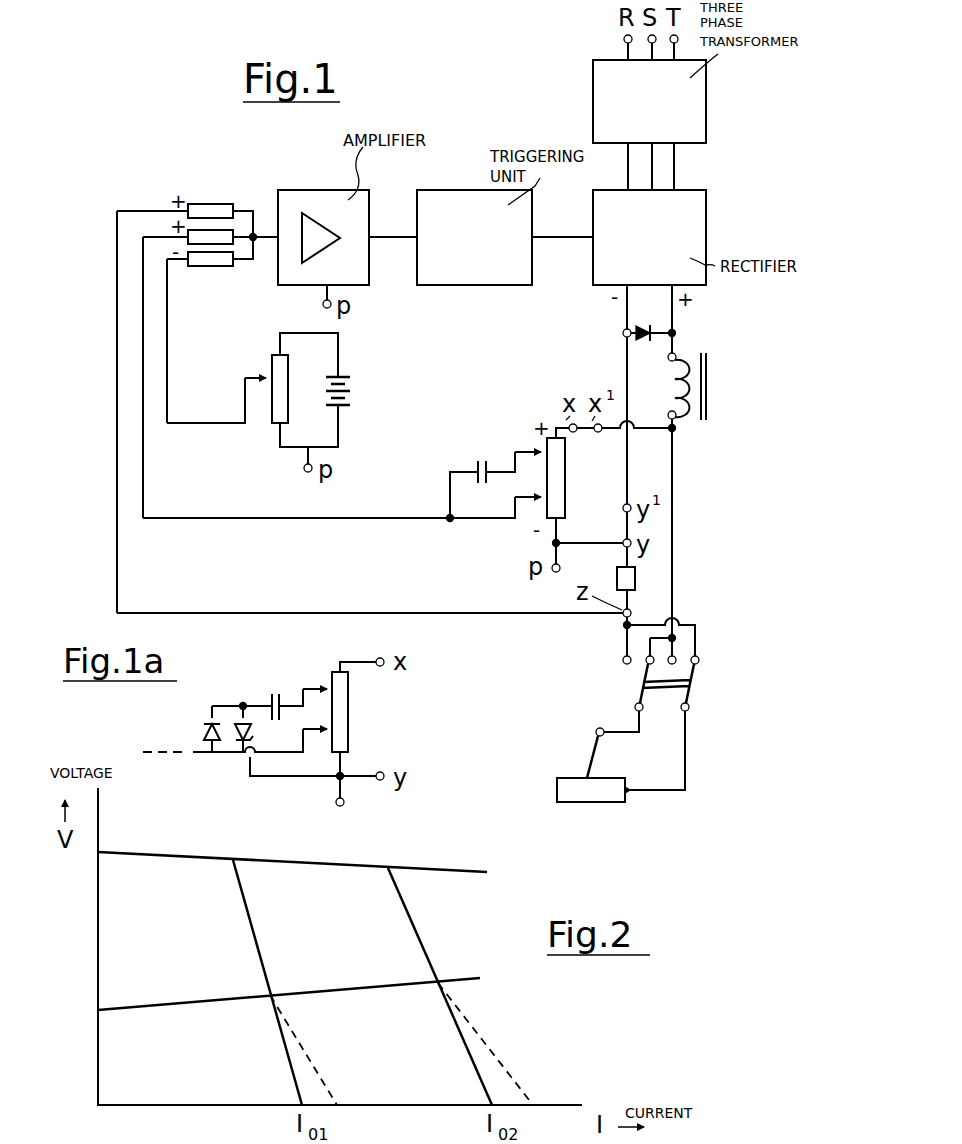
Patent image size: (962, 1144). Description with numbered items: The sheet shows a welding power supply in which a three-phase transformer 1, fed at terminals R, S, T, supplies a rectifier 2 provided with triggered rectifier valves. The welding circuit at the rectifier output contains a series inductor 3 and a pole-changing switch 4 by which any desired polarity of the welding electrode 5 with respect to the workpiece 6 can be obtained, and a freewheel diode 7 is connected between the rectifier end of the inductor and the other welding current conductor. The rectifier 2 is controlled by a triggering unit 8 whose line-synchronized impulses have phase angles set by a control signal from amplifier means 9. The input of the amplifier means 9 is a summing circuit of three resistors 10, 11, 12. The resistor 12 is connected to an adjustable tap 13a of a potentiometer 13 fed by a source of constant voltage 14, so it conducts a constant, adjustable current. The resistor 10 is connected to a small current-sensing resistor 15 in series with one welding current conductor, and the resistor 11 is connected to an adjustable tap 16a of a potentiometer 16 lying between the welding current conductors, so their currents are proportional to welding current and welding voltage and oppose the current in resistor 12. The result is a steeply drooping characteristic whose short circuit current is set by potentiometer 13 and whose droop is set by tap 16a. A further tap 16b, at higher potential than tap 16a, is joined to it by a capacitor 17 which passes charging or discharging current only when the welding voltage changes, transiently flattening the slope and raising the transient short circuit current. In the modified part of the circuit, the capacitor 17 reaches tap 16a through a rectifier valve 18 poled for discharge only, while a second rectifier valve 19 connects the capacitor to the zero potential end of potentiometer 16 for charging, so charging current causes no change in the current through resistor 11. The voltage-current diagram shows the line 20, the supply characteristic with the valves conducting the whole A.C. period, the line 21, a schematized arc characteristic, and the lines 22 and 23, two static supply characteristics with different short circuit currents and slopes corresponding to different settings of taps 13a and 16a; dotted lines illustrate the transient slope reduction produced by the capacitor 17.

In FIG. 1, the three-phase transformer 1 is at (610, 100).
In FIG. 1, the rectifier 2 is at (686, 222).
In FIG. 1, the series inductor 3 is at (708, 376).
In FIG. 1, the pole-changing switch 4 is at (690, 688).
In FIG. 1, the welding electrode 5 is at (586, 752).
In FIG. 1, the workpiece 6 is at (557, 792).
In FIG. 1, the freewheel diode 7 is at (633, 330).
In FIG. 1, the triggering unit 8 is at (469, 186).
In FIG. 1, the amplifier means 9 is at (320, 186).
In FIG. 1, the resistor 10 is at (202, 208).
In FIG. 1, the resistor 11 is at (216, 232).
In FIG. 1, the resistor 12 is at (212, 264).
In FIG. 1, the potentiometer 13 is at (272, 366).
In FIG. 1, the adjustable tap 13a is at (248, 376).
In FIG. 1, the source of constant voltage 14 is at (352, 388).
In FIG. 1, the resistor 15 is at (627, 578).
In FIG. 1, the potentiometer 16 is at (565, 467).
In FIG. 1A, the potentiometer 16 is at (348, 716).
In FIG. 1, the adjustable tap 16a is at (525, 508).
In FIG. 1A, the adjustable tap 16a is at (316, 735).
In FIG. 1, the adjustable tap 16b is at (530, 445).
In FIG. 1A, the adjustable tap 16b is at (325, 686).
In FIG. 1, the capacitor 17 is at (474, 470).
In FIG. 1A, the capacitor 17 is at (268, 695).
In FIG. 1A, the rectifier valve 18 is at (204, 730).
In FIG. 1A, the second rectifier valve 19 is at (240, 746).
In FIG. 2, the line 20 is at (315, 872).
In FIG. 2, the line 21 is at (160, 1005).
In FIG. 2, the line 22 is at (246, 905).
In FIG. 2, the line 23 is at (410, 906).